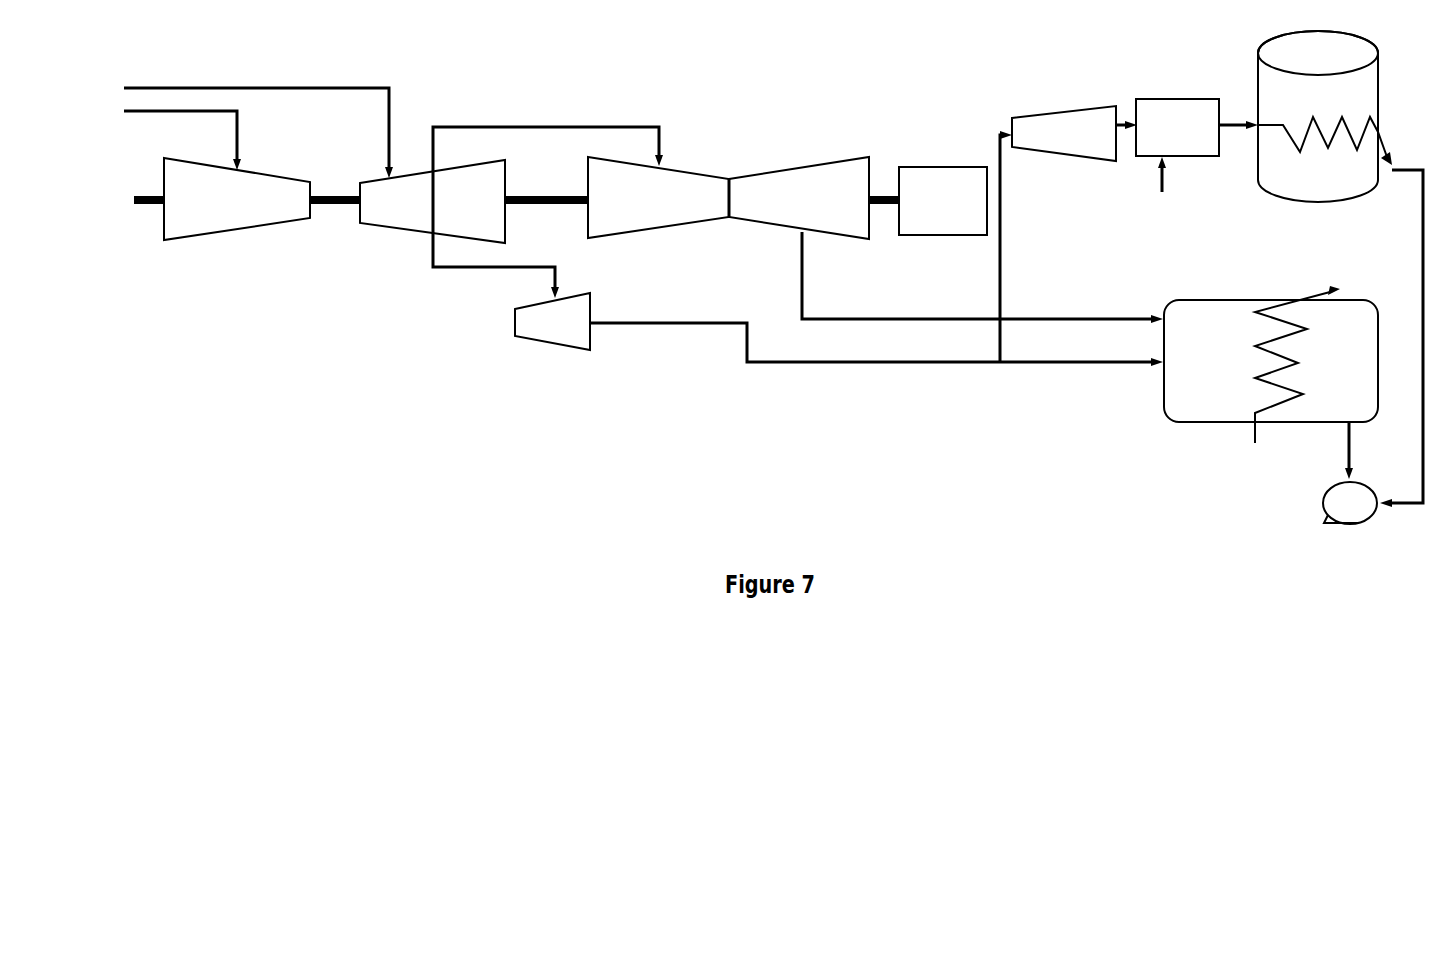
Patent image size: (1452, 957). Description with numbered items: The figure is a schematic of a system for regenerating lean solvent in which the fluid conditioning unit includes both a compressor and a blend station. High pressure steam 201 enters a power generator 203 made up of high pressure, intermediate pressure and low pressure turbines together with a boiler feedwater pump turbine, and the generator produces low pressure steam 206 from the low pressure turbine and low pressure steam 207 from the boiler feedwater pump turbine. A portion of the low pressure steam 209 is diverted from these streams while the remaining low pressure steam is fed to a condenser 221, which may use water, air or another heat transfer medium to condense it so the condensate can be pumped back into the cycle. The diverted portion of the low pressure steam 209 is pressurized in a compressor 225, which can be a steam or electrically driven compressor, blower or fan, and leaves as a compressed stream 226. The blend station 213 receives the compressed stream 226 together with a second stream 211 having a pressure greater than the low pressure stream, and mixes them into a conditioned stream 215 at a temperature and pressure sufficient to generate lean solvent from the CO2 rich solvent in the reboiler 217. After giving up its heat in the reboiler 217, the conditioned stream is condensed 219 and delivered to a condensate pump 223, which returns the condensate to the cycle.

The high pressure steam 201 is at (258, 94).
The power generator 203 is at (364, 358).
The low pressure steam 206 is at (982, 277).
The low pressure steam 207 is at (876, 375).
The portion of the low pressure steam 209 is at (1033, 246).
The second stream 211 is at (1192, 185).
The blend station 213 is at (1177, 106).
The conditioned stream 215 is at (1233, 69).
The reboiler 217 is at (1335, 113).
The condensed stream 219 is at (1380, 338).
The condenser 221 is at (1271, 357).
The condensate pump 223 is at (1336, 511).
The compressor 225 is at (1064, 114).
The compressed stream 226 is at (1116, 86).